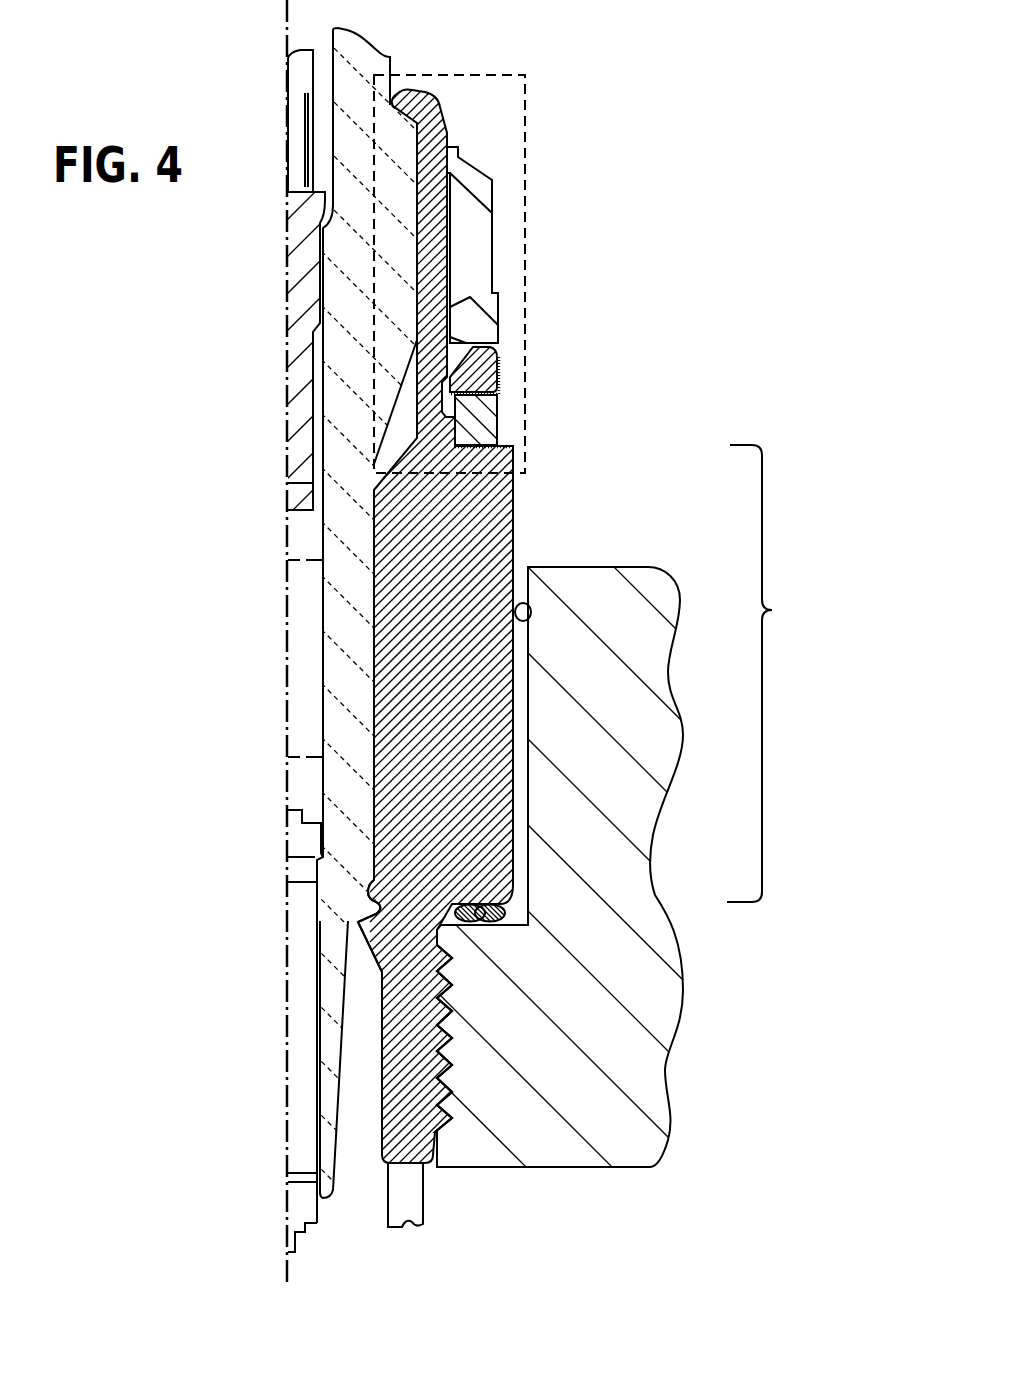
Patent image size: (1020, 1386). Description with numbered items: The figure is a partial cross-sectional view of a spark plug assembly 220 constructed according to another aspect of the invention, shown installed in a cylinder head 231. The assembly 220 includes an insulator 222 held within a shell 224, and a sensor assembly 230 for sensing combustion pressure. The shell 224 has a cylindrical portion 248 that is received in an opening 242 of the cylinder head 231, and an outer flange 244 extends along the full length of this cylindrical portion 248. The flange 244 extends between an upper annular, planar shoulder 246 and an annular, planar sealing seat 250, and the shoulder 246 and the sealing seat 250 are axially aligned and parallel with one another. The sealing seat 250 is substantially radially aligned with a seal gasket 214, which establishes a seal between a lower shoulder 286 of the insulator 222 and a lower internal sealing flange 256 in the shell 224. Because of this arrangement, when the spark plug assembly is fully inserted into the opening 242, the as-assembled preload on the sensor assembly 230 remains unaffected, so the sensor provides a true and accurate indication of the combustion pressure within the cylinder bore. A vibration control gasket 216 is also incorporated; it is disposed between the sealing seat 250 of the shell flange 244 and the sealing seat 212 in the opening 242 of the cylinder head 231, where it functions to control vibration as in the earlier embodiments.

The spark plug assembly 220 is at (642, 46).
The insulator 222 is at (313, 645).
The shell 224 is at (366, 715).
The sensor assembly 230 is at (538, 279).
The cylinder head 231 is at (582, 705).
The opening 242 is at (531, 620).
The outer flange 244 is at (513, 768).
The upper annular, planar shoulder 246 is at (514, 448).
The cylindrical portion 248 is at (626, 857).
The sealing seat 212 is at (521, 918).
The seal gasket 214 is at (353, 921).
The vibration control gasket 216 is at (472, 921).
The annular, planar sealing seat 250 is at (480, 923).
The lower internal sealing flange 256 is at (348, 938).
The lower shoulder 286 is at (376, 887).